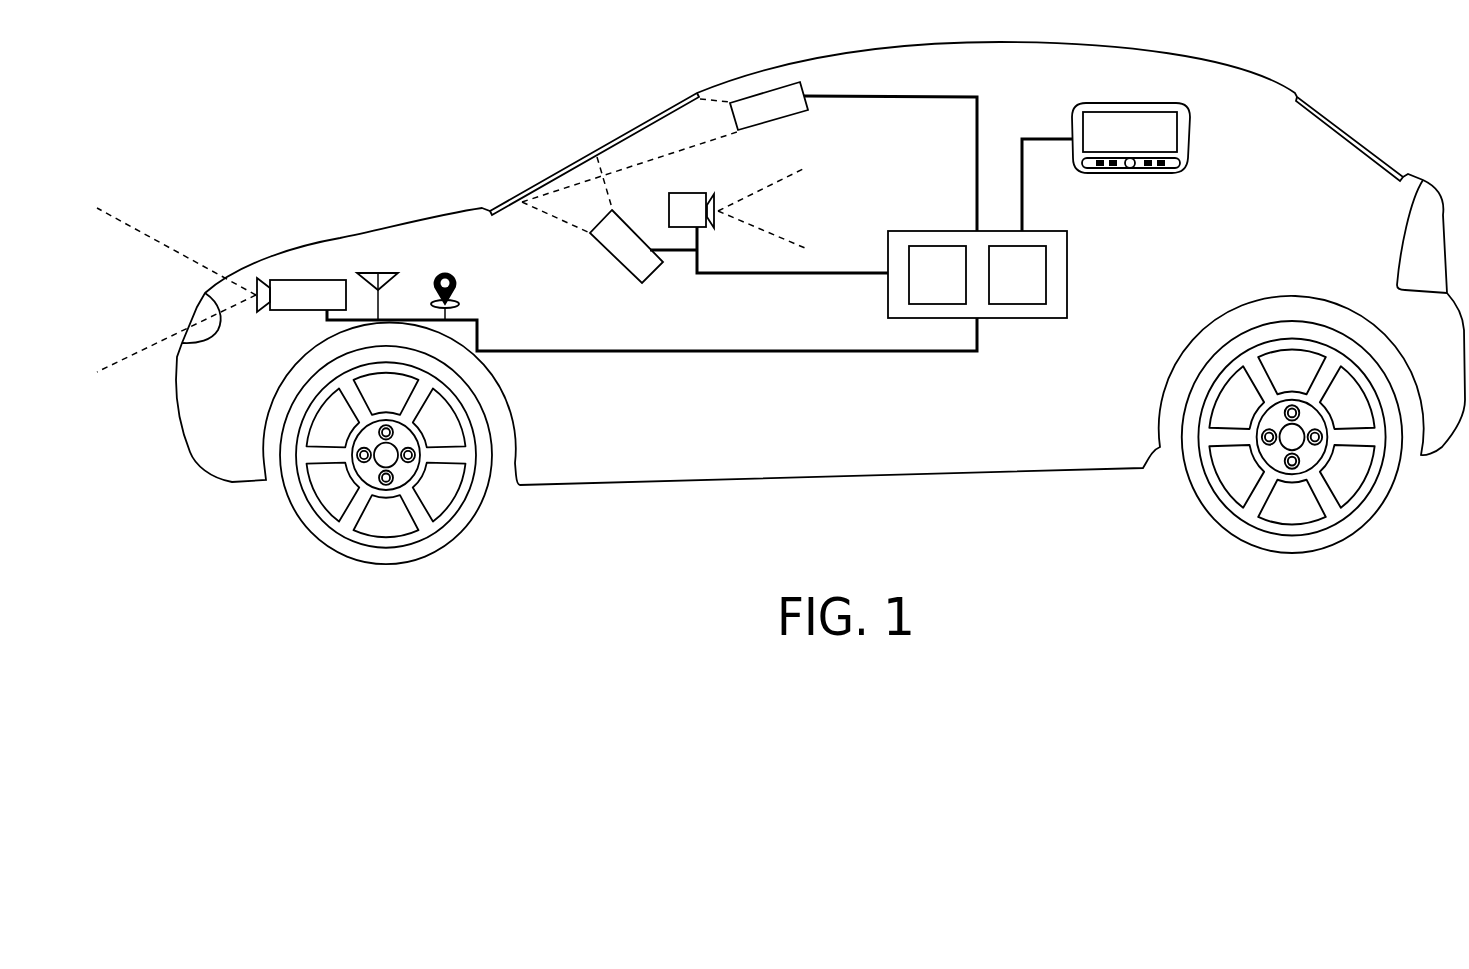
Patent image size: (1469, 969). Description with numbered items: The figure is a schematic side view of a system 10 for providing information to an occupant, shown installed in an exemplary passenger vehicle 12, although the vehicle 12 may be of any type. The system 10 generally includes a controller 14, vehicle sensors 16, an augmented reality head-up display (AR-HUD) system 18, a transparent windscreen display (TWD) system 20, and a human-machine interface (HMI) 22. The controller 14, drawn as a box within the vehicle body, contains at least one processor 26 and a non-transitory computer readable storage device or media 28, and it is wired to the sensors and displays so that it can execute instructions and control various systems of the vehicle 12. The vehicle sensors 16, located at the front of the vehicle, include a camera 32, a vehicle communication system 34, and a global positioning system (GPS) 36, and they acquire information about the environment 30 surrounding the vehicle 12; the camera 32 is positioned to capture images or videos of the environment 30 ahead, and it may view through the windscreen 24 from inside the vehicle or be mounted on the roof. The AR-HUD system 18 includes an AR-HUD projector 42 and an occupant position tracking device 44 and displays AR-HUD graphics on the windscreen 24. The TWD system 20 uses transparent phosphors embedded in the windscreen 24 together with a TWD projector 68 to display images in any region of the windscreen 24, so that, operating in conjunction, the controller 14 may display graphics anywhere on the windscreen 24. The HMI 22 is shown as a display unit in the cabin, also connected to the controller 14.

The system for providing information to an occupant of a vehicle 10 is at (546, 148).
The vehicle 12 is at (1203, 58).
The controller 14 is at (1067, 317).
The vehicle sensors 16 is at (266, 333).
The augmented reality head-up display (AR-HUD) system 18 is at (681, 274).
The transparent windscreen display (TWD) system 20 is at (848, 87).
The human-machine interface (HMI) 22 is at (1190, 158).
The windscreen 24 is at (645, 125).
The processor 26 is at (937, 275).
The non-transitory computer readable storage device or media 28 is at (1017, 275).
The environment 30 is at (211, 221).
The camera 32 is at (301, 295).
The vehicle communication system 34 is at (360, 272).
The global positioning system (GPS) 36 is at (442, 275).
The AR-HUD projector 42 is at (613, 260).
The occupant position tracking device 44 is at (680, 193).
The TWD projector 68 is at (777, 120).